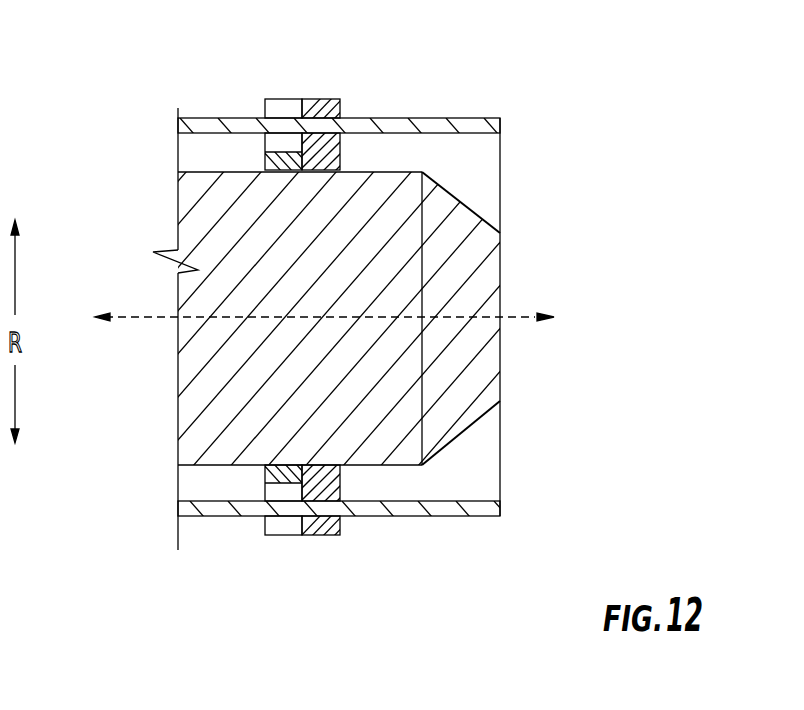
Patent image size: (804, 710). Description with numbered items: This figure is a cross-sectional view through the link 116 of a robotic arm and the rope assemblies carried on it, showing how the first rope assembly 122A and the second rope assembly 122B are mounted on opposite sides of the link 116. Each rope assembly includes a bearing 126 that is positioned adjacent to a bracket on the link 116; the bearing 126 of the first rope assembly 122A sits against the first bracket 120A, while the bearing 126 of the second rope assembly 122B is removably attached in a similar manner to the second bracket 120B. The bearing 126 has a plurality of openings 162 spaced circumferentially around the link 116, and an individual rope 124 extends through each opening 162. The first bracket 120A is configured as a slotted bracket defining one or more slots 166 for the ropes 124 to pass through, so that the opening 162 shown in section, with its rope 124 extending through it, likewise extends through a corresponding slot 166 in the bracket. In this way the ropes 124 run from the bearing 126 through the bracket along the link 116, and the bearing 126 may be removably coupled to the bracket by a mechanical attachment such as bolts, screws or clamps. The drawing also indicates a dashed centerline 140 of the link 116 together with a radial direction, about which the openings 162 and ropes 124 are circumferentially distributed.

The link 116 is at (212, 230).
The first bracket 120A is at (265, 115).
The second bracket 120B is at (265, 525).
The first rope assembly 122A is at (376, 82).
The second rope assembly 122B is at (374, 566).
The rope 124 is at (430, 118).
The bearing 126 is at (320, 106).
The axis 140 is at (520, 317).
The opening 162 is at (350, 143).
The slot 166 is at (277, 86).